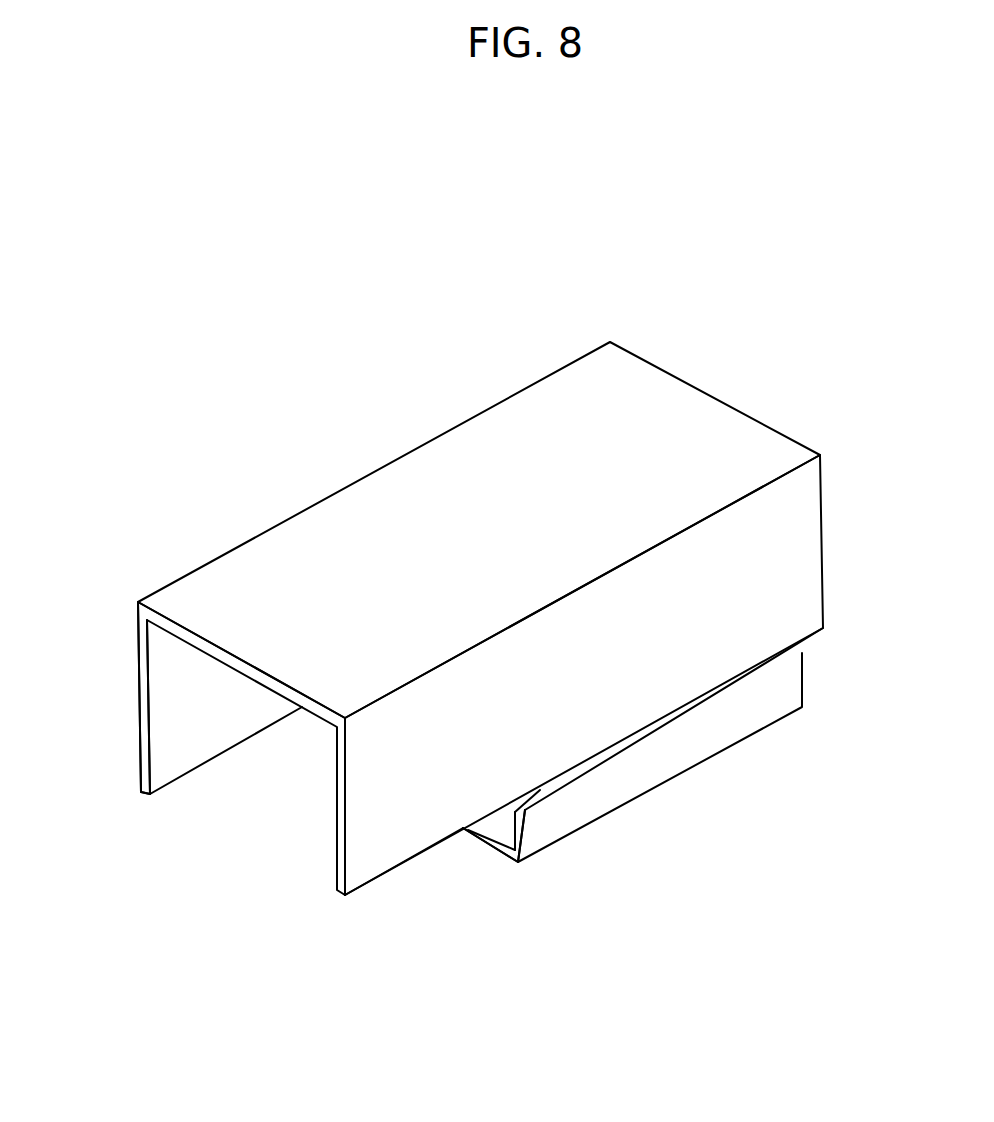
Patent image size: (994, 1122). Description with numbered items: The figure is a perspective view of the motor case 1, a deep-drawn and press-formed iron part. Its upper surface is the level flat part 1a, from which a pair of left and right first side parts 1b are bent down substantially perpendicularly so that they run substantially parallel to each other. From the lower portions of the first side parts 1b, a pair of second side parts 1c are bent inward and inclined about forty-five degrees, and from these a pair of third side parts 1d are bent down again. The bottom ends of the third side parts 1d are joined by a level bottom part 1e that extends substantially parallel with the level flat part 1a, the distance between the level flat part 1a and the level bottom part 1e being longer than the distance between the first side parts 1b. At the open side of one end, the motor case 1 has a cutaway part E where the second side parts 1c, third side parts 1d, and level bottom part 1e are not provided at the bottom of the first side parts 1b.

The motor case 1 is at (170, 348).
The level flat part 1a is at (463, 458).
The first side parts 1b is at (138, 708).
The second side parts 1c is at (700, 705).
The third side parts 1d is at (620, 790).
The level bottom part 1e is at (493, 848).
The cutaway part E is at (428, 862).